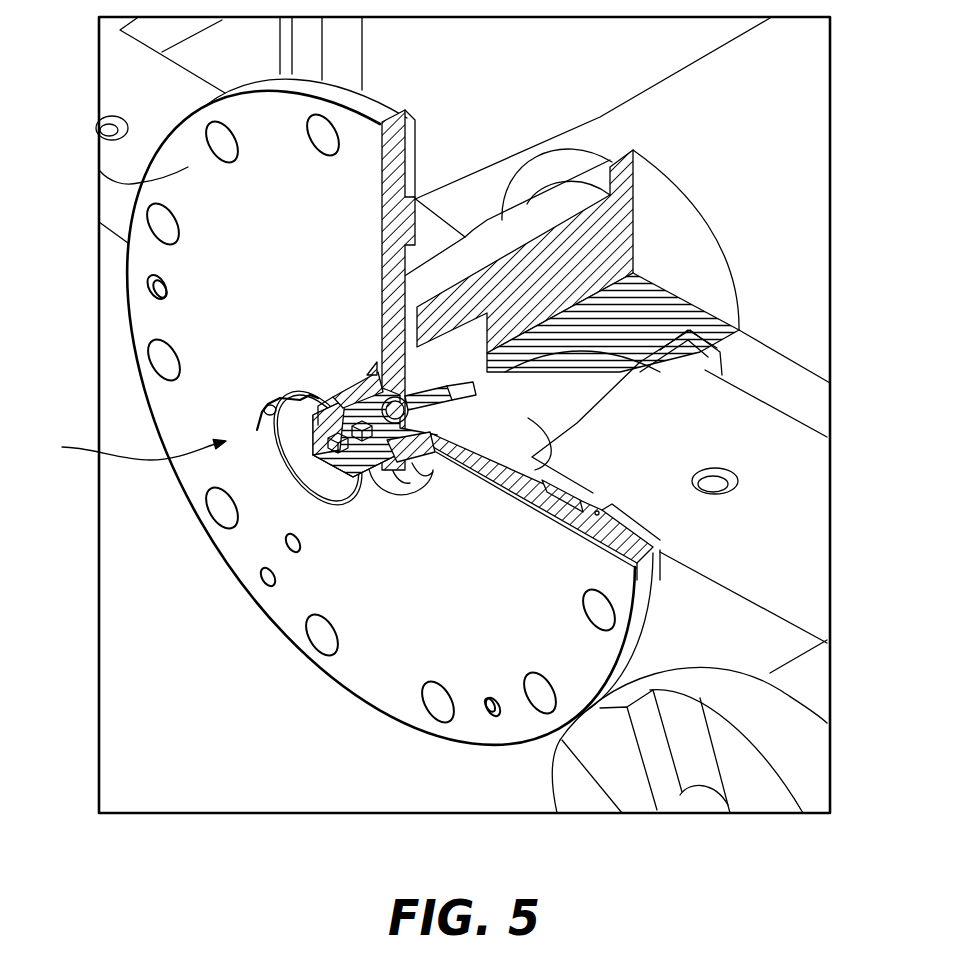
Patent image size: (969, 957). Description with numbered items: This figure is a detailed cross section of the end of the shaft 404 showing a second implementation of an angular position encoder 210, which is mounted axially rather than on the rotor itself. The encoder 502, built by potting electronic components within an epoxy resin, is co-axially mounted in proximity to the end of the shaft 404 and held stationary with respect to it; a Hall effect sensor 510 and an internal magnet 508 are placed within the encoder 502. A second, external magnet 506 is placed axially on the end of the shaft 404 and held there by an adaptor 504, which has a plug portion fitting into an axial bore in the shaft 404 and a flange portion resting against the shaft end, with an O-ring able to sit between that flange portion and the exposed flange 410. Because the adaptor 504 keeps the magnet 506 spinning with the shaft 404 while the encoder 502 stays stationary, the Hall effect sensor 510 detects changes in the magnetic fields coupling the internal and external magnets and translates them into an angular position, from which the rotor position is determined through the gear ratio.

The flange 410 is at (188, 170).
The shaft 404 is at (712, 288).
The adaptor 504 is at (712, 385).
The external magnet 506 is at (365, 350).
The internal magnet 508 is at (375, 372).
The angular position encoder 210 is at (125, 447).
The Hall effect sensor 510 is at (328, 440).
The encoder 502 is at (357, 490).